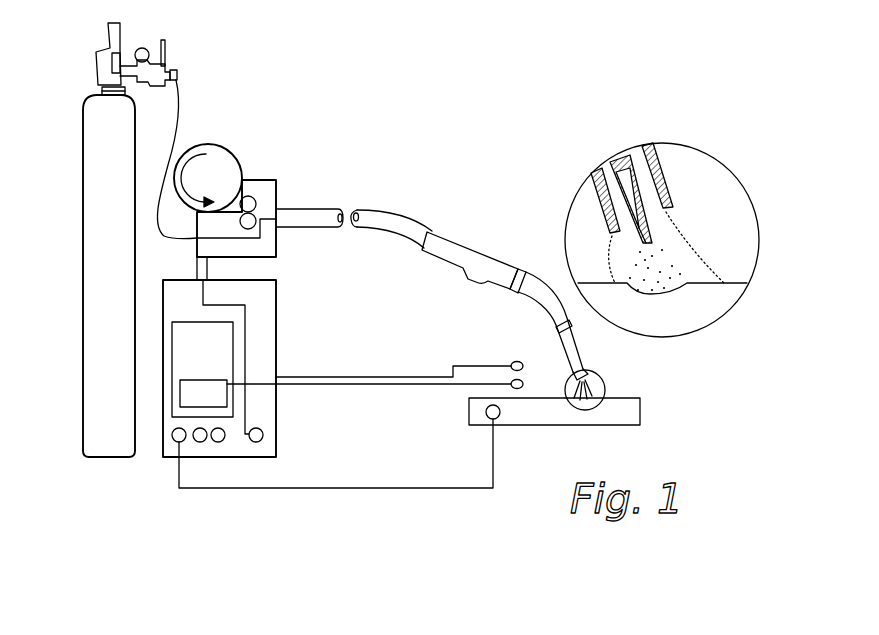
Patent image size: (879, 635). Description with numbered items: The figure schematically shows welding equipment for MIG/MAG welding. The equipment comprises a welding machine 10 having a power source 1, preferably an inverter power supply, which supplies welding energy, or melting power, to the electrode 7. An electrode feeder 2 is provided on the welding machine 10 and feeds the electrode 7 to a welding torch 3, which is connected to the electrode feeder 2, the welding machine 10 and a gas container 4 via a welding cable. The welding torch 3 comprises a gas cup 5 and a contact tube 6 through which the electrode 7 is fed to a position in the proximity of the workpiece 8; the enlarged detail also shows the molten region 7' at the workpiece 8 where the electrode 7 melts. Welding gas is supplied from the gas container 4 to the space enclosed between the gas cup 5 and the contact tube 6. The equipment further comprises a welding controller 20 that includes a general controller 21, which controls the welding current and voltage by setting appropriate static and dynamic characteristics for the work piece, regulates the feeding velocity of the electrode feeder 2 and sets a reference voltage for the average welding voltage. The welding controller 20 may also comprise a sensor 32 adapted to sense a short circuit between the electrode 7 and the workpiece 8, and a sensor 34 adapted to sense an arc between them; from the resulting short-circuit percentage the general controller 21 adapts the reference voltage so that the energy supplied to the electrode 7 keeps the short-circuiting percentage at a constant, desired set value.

The power source 1 is at (276, 296).
The electrode feeder 2 is at (258, 190).
The welding torch 3 is at (458, 250).
The gas container 4 is at (102, 148).
The gas cup 5 is at (598, 194).
The contact tube 6 is at (620, 156).
The electrode 7 is at (700, 195).
The molten weld pool / arc 7' is at (722, 264).
The workpiece 8 is at (628, 407).
The welding machine 10 is at (433, 144).
The welding controller 20 is at (212, 395).
The general controller 21 is at (228, 347).
The sensor 32 is at (511, 382).
The sensor 34 is at (515, 361).